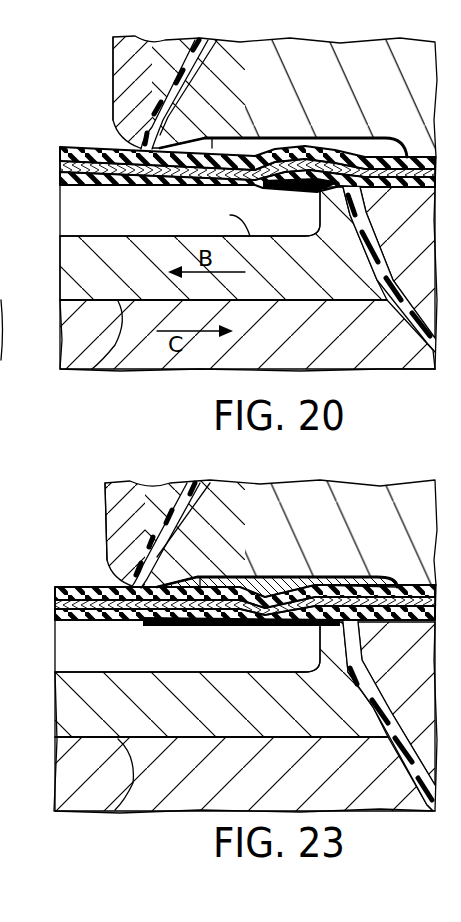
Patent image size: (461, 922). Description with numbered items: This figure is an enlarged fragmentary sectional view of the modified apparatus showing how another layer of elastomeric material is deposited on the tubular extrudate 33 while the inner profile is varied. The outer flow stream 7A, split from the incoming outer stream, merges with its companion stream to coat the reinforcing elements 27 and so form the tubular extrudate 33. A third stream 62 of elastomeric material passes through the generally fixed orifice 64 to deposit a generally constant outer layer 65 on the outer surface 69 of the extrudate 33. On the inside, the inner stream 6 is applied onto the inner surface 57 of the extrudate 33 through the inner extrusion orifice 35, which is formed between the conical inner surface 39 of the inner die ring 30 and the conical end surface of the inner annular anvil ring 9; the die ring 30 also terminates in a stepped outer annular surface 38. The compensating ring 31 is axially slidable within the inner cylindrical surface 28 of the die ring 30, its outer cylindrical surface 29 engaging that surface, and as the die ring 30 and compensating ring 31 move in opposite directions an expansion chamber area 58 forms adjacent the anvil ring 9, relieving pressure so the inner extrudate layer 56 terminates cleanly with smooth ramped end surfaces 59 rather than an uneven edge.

In FIG. 20, the inner stream 6 is at (412, 311).
In FIG. 20, the outer flow stream 7A is at (412, 155).
In FIG. 20, the inner annular anvil ring 9 is at (422, 240).
In FIG. 23, the inner annular anvil ring 9 is at (218, 703).
In FIG. 23, the reinforcing elements 27 is at (90, 622).
In FIG. 20, the inner cylindrical surface 28 is at (72, 299).
In FIG. 23, the inner cylindrical surface 28 is at (88, 737).
In FIG. 20, the outer cylindrical surface 29 is at (90, 372).
In FIG. 23, the outer cylindrical surface 29 is at (113, 808).
In FIG. 20, the inner die ring 30 is at (107, 248).
In FIG. 23, the inner die ring 30 is at (221, 679).
In FIG. 20, the compensating ring 31 is at (365, 366).
In FIG. 23, the compensating ring 31 is at (77, 796).
In FIG. 20, the tubular extrudate 33 is at (62, 163).
In FIG. 23, the tubular extrudate 33 is at (57, 598).
In FIG. 23, the inner extrusion orifice 35 is at (345, 622).
In FIG. 20, the stepped outer annular surface 38 is at (225, 216).
In FIG. 20, the conical inner surface 39 is at (356, 258).
In FIG. 20, the inner extrudate layer 56 is at (308, 192).
In FIG. 20, the inner surface 57 is at (100, 187).
In FIG. 23, the expansion chamber area 58 is at (228, 627).
In FIG. 23, the ramped end surfaces 59 is at (150, 627).
In FIG. 20, the third stream 62 is at (188, 70).
In FIG. 23, the third stream 62 is at (189, 508).
In FIG. 20, the fixed orifice 64 is at (155, 130).
In FIG. 20, the outer layer 65 is at (72, 147).
In FIG. 23, the outer surface 69 is at (72, 588).